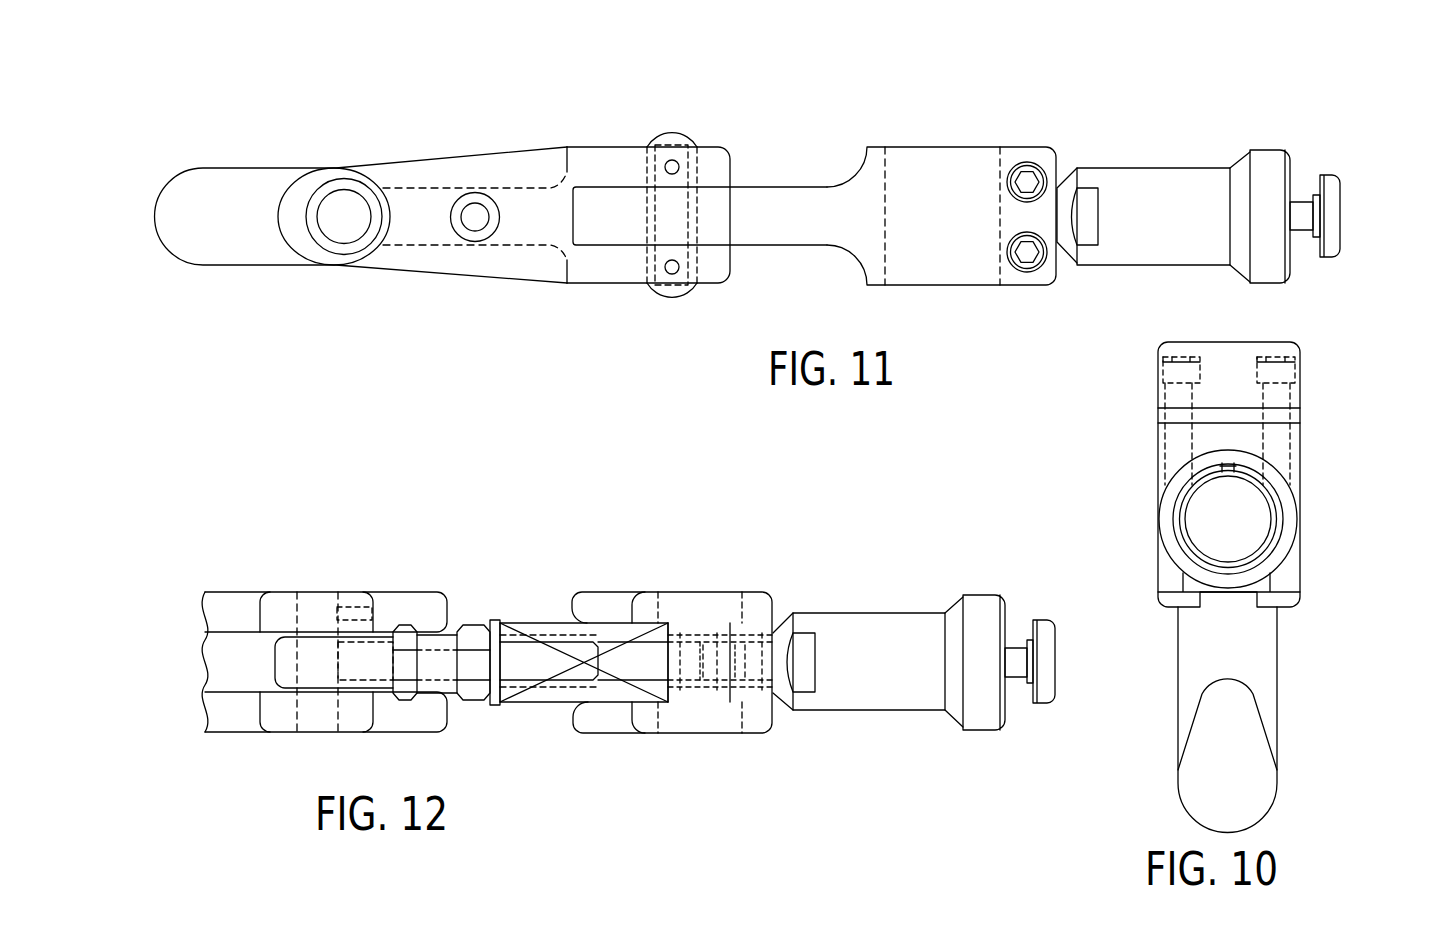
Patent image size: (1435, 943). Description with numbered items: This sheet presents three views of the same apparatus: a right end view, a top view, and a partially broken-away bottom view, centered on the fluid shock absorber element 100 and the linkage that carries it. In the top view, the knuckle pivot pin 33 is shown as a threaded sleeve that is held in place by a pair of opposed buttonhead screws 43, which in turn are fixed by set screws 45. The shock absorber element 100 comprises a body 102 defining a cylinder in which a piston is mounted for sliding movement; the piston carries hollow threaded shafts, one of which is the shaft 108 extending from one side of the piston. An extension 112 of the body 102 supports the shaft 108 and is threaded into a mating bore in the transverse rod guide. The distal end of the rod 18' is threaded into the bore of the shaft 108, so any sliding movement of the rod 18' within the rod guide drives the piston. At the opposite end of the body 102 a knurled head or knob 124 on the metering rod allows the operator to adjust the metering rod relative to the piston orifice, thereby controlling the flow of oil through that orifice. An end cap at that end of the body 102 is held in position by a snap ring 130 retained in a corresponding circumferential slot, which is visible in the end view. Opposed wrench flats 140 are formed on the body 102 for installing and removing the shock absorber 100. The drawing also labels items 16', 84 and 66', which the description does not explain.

In FIG. 11, the handle 16' is at (361, 240).
In FIG. 12, the handle 16' is at (345, 576).
In FIG. 10, the handle 16' is at (1278, 709).
In FIG. 11, the pivot bore 84 is at (342, 217).
In FIG. 11, the knuckle pivot pin 33 is at (697, 213).
In FIG. 11, the set screws 45 is at (653, 160).
In FIG. 11, the buttonhead screws 43 is at (653, 140).
In FIG. 11, the shock absorber element 100 is at (1245, 163).
In FIG. 12, the shock absorber element 100 is at (915, 642).
In FIG. 11, the body 102 is at (1212, 167).
In FIG. 12, the body 102 is at (915, 613).
In FIG. 10, the body 102 is at (1273, 467).
In FIG. 11, the wrench flats 140 is at (1087, 215).
In FIG. 12, the wrench flats 140 is at (803, 663).
In FIG. 11, the knurled head or knob 124 is at (1340, 200).
In FIG. 12, the knurled head or knob 124 is at (1042, 620).
In FIG. 10, the knurled head or knob 124 is at (1263, 520).
In FIG. 12, the nut 66' is at (475, 584).
In FIG. 12, the rod 18' is at (672, 633).
In FIG. 12, the hollow threaded shaft 108 is at (723, 676).
In FIG. 12, the extension 112 is at (748, 688).
In FIG. 10, the snap ring 130 is at (1263, 478).